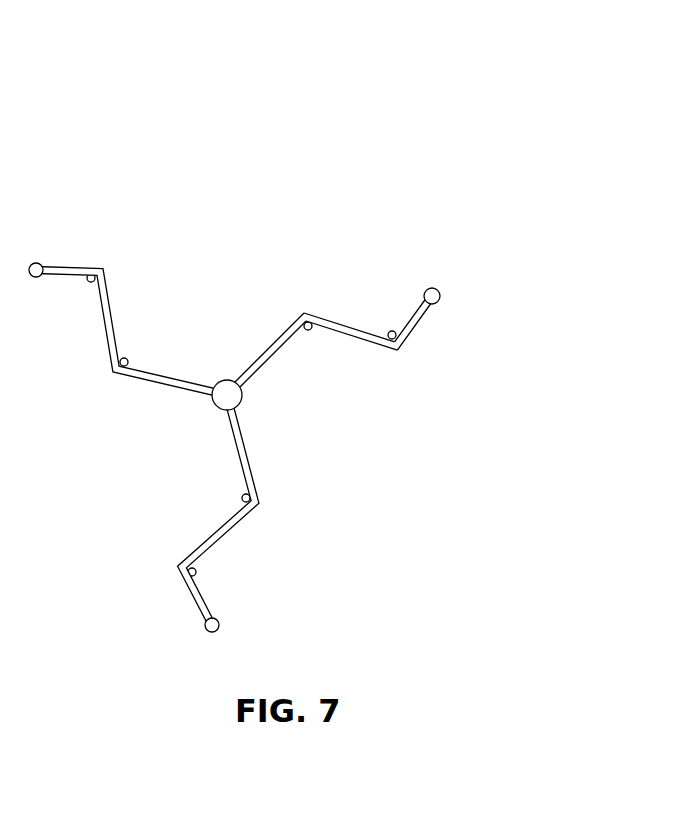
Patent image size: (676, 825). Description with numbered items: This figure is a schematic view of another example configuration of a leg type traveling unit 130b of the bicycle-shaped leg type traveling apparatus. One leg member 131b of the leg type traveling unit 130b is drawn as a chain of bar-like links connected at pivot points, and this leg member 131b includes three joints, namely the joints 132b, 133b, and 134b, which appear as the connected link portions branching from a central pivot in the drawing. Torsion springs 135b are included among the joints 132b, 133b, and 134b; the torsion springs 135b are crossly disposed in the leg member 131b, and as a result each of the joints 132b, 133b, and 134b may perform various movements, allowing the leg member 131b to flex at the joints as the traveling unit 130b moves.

The leg type traveling unit 130b is at (248, 49).
The leg member 131b is at (343, 350).
The joint 132b is at (267, 347).
The joint 133b is at (342, 323).
The joint 134b is at (403, 332).
The torsion springs 135b is at (390, 337).